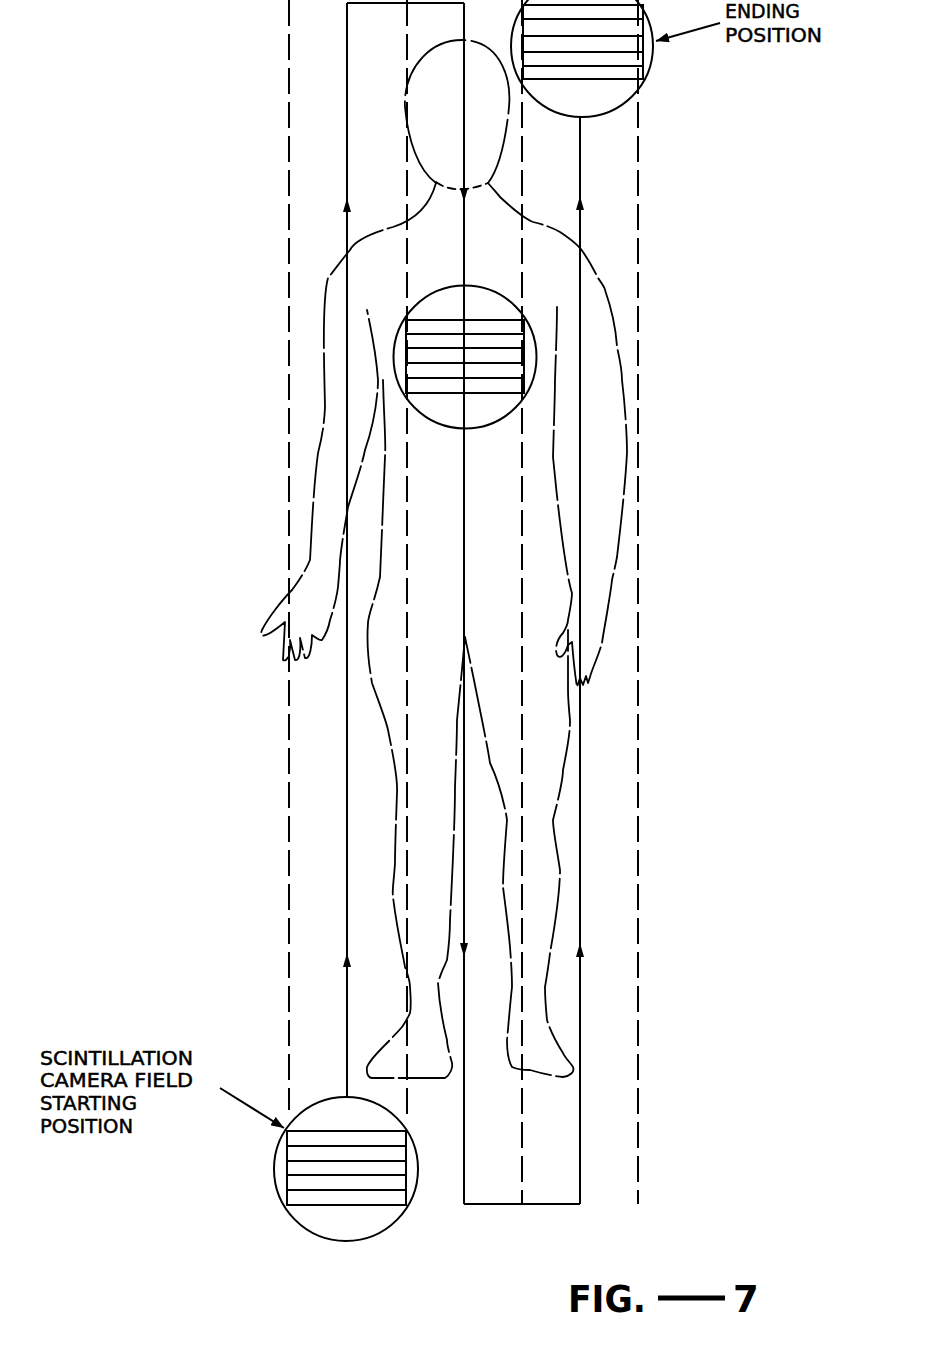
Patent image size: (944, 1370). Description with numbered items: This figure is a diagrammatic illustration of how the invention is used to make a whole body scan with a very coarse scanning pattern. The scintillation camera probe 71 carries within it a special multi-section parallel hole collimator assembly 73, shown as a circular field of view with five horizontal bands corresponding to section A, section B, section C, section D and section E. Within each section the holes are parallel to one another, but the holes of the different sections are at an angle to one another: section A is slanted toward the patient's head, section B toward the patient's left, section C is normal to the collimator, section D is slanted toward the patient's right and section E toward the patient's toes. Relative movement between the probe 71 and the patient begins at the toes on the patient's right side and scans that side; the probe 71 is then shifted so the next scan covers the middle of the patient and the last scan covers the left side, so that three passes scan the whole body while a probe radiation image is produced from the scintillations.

The scintillation camera 71 is at (327, 1240).
The collimator assembly 73 is at (296, 1198).
The collimator section A is at (536, 327).
The collimator section B is at (536, 341).
The collimator section C is at (536, 357).
The collimator section D is at (536, 372).
The collimator section E is at (536, 387).